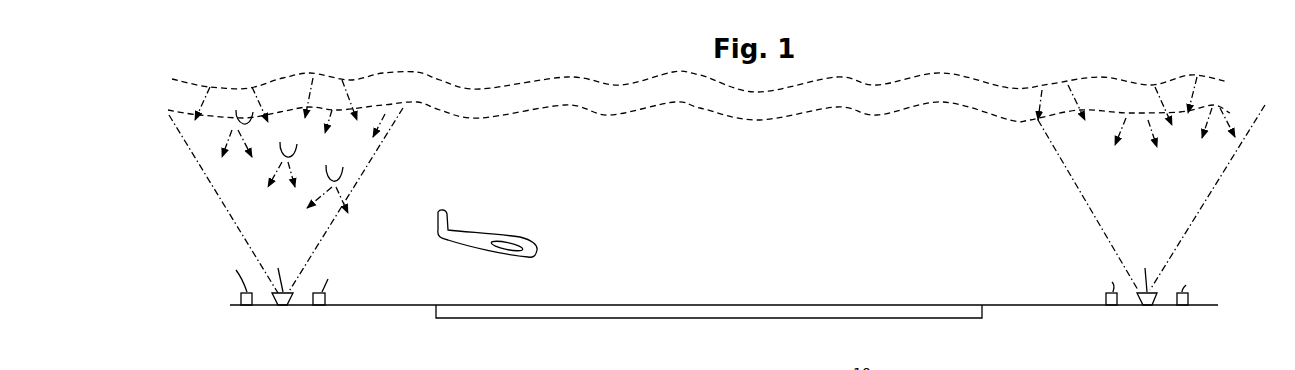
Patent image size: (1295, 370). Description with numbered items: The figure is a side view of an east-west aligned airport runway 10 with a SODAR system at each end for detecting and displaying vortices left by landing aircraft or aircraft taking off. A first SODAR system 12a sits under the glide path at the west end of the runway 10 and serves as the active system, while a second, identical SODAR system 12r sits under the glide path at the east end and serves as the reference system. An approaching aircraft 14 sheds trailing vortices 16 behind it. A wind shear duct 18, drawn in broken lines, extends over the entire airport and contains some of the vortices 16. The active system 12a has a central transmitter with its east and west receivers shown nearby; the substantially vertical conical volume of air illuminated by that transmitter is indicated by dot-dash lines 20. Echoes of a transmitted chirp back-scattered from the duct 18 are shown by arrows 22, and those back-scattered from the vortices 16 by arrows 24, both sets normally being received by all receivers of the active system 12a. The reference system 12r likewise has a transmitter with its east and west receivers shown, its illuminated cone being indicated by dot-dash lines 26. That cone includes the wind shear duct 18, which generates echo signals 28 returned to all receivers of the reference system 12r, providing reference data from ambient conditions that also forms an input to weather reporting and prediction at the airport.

The runway 10 is at (698, 297).
The first SODAR system 12a is at (313, 328).
The second SODAR system 12r is at (1157, 321).
The approaching aircraft 14 is at (497, 228).
The trailing vortices 16 is at (237, 111).
The wind shear duct 18 is at (584, 94).
The dot-dash lines 20 is at (386, 137).
The arrows 22 is at (310, 91).
The arrows 24 is at (230, 143).
The dot-dash lines 26 is at (1095, 215).
The echo signals 28 is at (1070, 97).